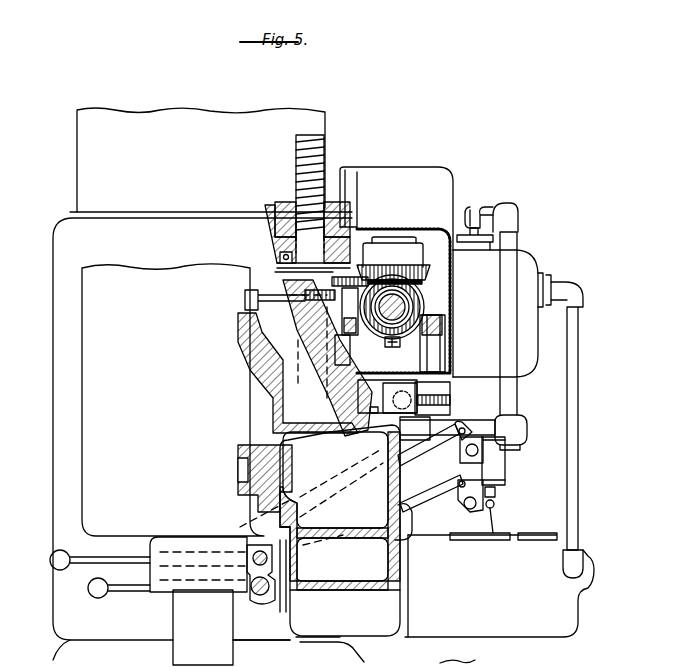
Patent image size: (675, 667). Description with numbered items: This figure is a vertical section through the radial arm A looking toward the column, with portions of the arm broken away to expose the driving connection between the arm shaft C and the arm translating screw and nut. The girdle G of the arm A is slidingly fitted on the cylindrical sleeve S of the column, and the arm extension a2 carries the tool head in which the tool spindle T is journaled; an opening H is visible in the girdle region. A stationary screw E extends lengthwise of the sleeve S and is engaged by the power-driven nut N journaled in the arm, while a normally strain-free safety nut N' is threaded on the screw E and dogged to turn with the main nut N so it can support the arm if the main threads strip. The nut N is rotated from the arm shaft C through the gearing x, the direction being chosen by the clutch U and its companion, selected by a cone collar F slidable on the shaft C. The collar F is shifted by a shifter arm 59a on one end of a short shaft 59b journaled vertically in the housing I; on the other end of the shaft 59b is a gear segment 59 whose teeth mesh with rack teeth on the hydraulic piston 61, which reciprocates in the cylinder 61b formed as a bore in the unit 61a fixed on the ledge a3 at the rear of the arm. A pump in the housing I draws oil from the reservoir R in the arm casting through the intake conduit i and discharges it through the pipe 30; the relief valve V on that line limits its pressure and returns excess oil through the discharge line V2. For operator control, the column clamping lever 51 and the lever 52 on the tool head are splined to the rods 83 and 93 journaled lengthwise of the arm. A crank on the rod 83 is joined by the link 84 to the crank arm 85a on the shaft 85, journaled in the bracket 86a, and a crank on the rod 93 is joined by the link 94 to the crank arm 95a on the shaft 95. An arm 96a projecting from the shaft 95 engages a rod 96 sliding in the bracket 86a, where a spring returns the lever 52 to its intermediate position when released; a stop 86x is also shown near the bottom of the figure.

The cylindrical sleeve S is at (201, 160).
The stationary screw E is at (295, 140).
The safety nut N' is at (291, 217).
The power driven nut N is at (290, 238).
The girdle G is at (55, 318).
The opening H is at (173, 400).
The housing I is at (402, 172).
The gearing x is at (430, 278).
The clutch U is at (440, 292).
The cone collar F is at (440, 295).
The arm shaft C is at (440, 302).
The pipe 30 is at (506, 210).
The shifter arm 59a is at (372, 352).
The short shaft 59b is at (453, 347).
The gear segment 59 is at (452, 398).
The hydraulic piston 61 is at (384, 395).
The unit 61a is at (355, 406).
The cylinder 61b is at (358, 390).
The arm extension a2 is at (244, 478).
The ledge a3 is at (341, 481).
The link 84 is at (340, 486).
The rod 83 is at (276, 560).
The rod 93 is at (258, 602).
The column clamping lever 51 is at (96, 562).
The lever 52 is at (134, 588).
The tool spindle T is at (203, 627).
The radial arm A is at (402, 606).
The reservoir R is at (499, 585).
The intake conduit i is at (579, 358).
The relief valve V is at (524, 422).
The discharge line V2 is at (512, 481).
The link 94 is at (440, 498).
The shaft 85 is at (492, 462).
The crank arm 85a is at (460, 442).
The bracket 86a is at (505, 458).
The rod 96 is at (497, 494).
The shaft 95 is at (495, 508).
The crank arm 95a is at (478, 514).
The arm 96a is at (493, 533).
The stop 86x is at (486, 657).